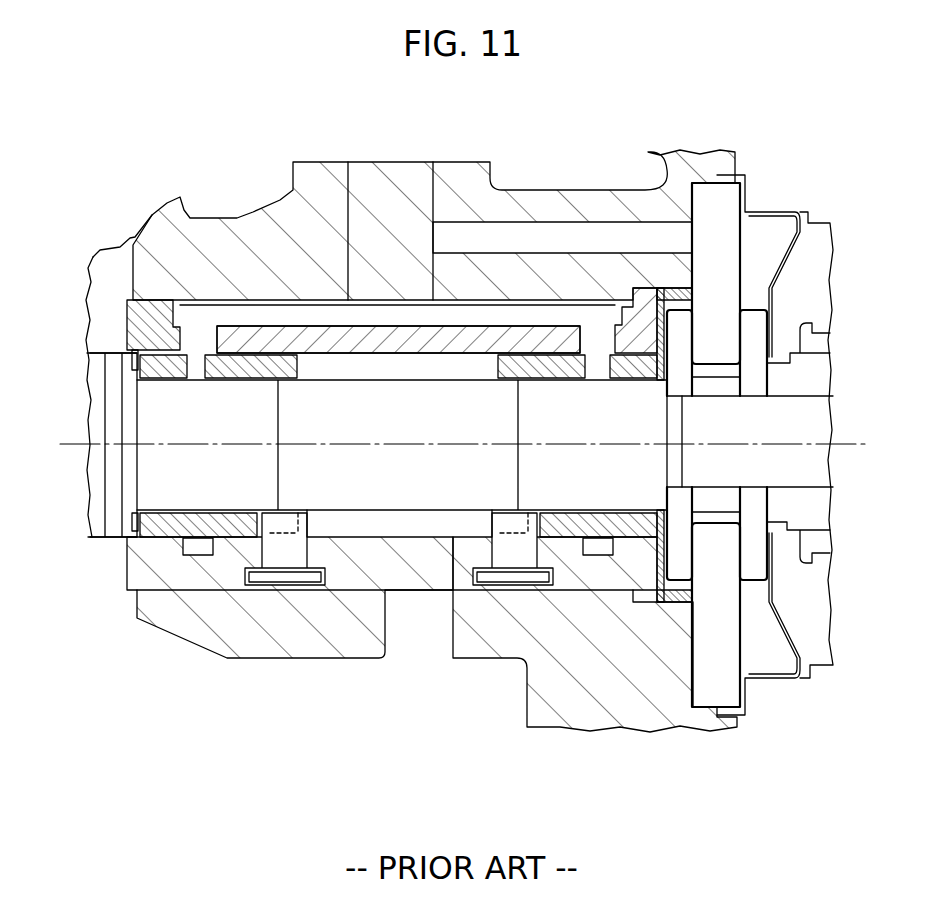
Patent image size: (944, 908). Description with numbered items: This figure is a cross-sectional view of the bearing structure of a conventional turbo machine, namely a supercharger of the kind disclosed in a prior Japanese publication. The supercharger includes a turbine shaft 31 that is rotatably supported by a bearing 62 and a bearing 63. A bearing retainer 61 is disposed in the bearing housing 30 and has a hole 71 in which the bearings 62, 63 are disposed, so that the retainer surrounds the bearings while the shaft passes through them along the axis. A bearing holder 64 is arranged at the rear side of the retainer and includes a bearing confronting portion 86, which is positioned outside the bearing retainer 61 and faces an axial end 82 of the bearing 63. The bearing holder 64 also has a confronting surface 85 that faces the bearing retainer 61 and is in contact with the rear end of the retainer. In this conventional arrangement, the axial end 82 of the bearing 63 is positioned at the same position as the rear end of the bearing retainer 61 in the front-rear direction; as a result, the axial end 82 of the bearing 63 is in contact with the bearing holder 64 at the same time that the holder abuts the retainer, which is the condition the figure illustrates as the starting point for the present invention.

The bearing housing 30 is at (745, 98).
The turbine shaft 31 is at (163, 485).
The bearing retainer 61 is at (480, 340).
The bearing 62 is at (237, 378).
The bearing 63 is at (547, 340).
The bearing holder 64 is at (680, 289).
The hole 71 is at (342, 342).
The axial end 82 is at (664, 368).
The confronting surface 85 is at (643, 292).
The bearing confronting portion 86 is at (630, 355).